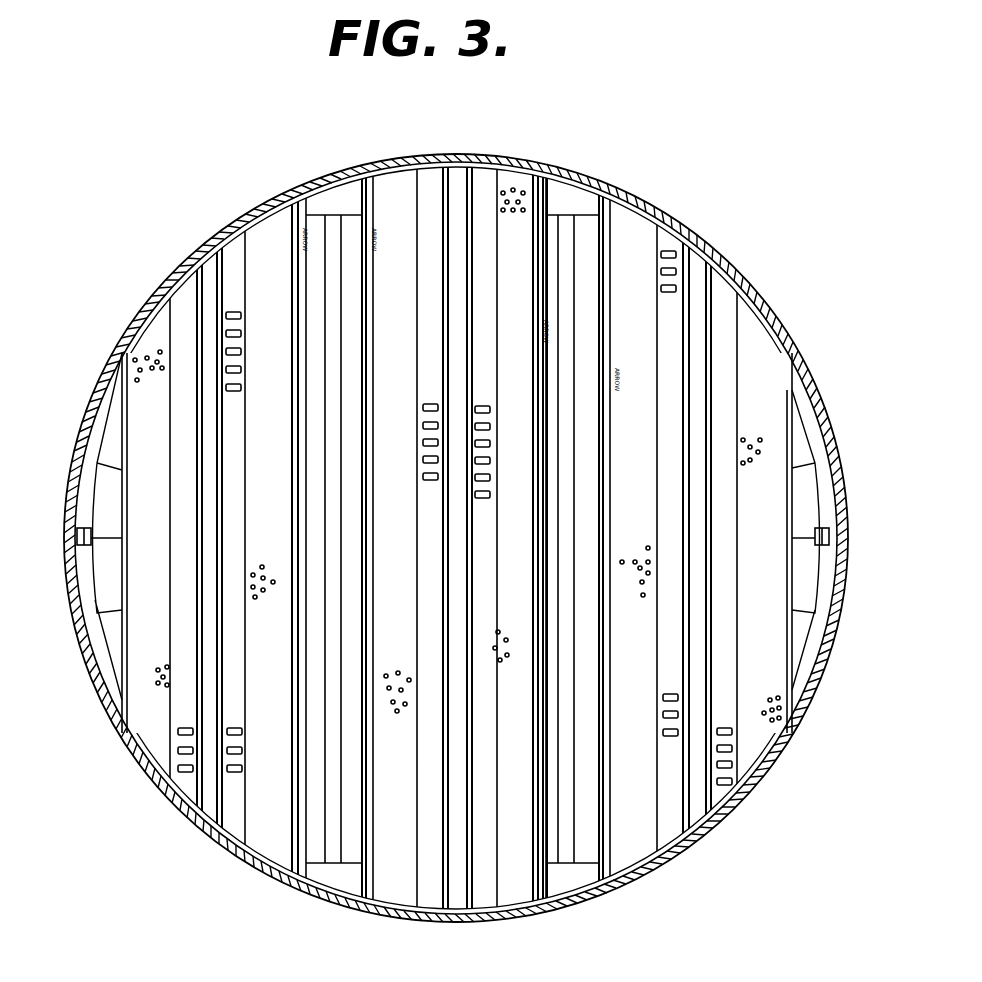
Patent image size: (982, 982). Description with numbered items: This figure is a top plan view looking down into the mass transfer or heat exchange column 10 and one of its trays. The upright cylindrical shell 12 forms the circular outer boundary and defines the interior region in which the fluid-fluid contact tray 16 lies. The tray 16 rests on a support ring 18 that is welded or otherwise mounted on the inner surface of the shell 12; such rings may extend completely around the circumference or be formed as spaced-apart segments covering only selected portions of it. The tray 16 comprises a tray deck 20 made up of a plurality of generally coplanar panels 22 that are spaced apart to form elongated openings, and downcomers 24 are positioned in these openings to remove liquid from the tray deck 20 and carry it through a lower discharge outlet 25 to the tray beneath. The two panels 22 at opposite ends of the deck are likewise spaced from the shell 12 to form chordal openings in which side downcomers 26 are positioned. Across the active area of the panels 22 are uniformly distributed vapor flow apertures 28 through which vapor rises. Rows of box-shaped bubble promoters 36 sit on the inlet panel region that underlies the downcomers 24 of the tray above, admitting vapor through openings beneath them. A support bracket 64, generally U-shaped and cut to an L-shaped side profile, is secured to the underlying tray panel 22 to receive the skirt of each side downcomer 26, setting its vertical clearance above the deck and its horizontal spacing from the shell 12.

The mass transfer or heat exchange column 10 is at (456, 511).
The cylindrical shell 12 is at (688, 236).
The fluid-fluid contact tray 16 is at (403, 198).
The support ring 18 is at (727, 277).
The tray deck 20 is at (510, 183).
The panel 22 is at (531, 214).
The downcomer 24 is at (333, 866).
The lower discharge outlet 25 is at (337, 810).
The side downcomer 26 is at (799, 447).
The vapor flow aperture 28 is at (643, 553).
The bubble promoter 36 is at (735, 770).
The support bracket 64 is at (77, 538).